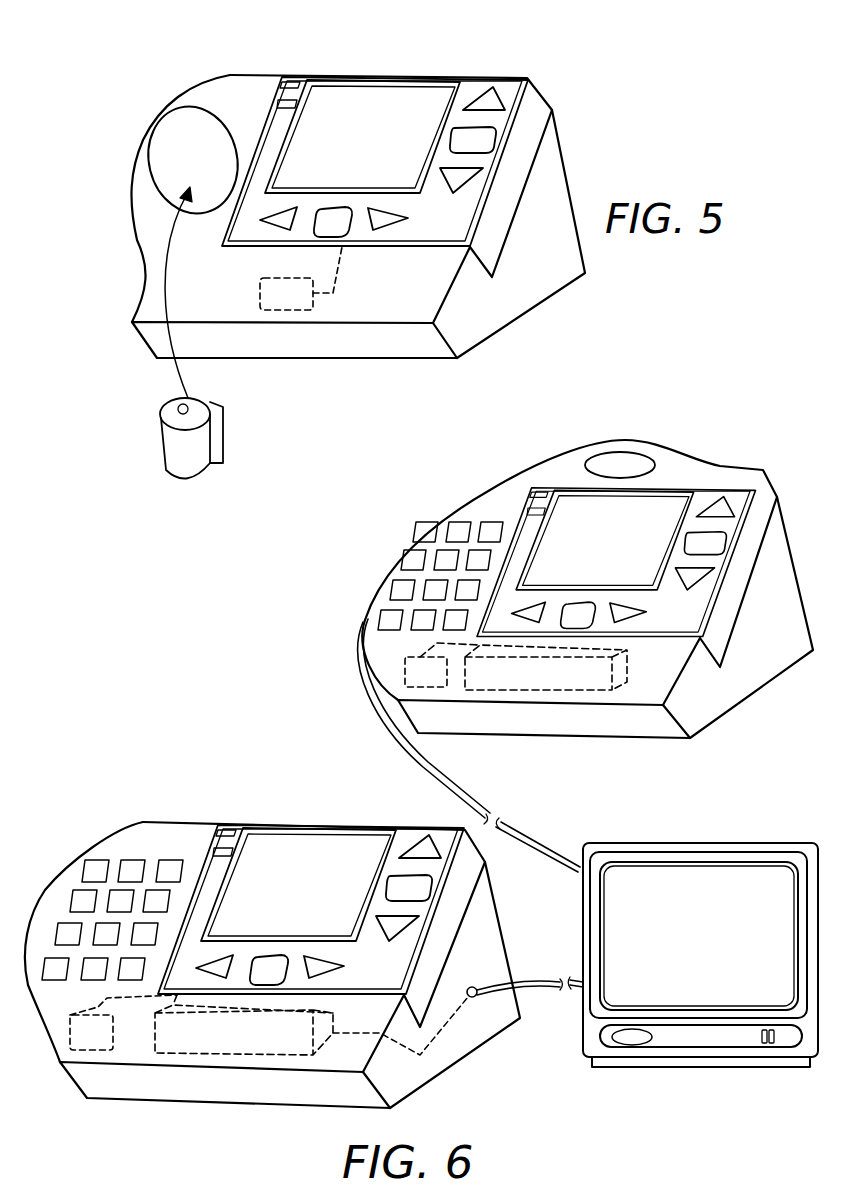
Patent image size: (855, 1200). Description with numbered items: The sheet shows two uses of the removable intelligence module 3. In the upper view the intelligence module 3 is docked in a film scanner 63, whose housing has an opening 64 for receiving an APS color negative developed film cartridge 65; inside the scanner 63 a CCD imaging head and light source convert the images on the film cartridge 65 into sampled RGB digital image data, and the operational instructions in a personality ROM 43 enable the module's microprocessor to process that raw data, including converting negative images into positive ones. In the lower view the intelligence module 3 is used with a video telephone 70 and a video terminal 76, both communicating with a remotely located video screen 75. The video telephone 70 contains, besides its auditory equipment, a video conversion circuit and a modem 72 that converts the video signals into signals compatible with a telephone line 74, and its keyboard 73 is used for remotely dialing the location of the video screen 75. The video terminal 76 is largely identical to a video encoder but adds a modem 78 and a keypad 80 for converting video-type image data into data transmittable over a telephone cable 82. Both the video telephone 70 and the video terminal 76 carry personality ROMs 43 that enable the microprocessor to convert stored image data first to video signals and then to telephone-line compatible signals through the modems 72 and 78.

In FIG. 5, the intelligence module 3 is at (374, 151).
In FIG. 6, the intelligence module 3 is at (614, 557).
In FIG. 5, the personality ROM 43 is at (258, 292).
In FIG. 6, the personality ROM 43 is at (427, 687).
In FIG. 5, the film scanner 63 is at (228, 67).
In FIG. 5, the opening 64 is at (155, 145).
In FIG. 5, the film cartridge 65 is at (175, 442).
In FIG. 6, the video telephone 70 is at (560, 443).
In FIG. 6, the modem 72 is at (547, 690).
In FIG. 6, the keyboard 73 is at (418, 530).
In FIG. 6, the telephone line 74 is at (463, 782).
In FIG. 6, the video screen 75 is at (713, 940).
In FIG. 6, the video terminal 76 is at (117, 822).
In FIG. 6, the modem 78 is at (237, 1053).
In FIG. 6, the keypad 80 is at (83, 872).
In FIG. 6, the telephone cable 82 is at (525, 980).